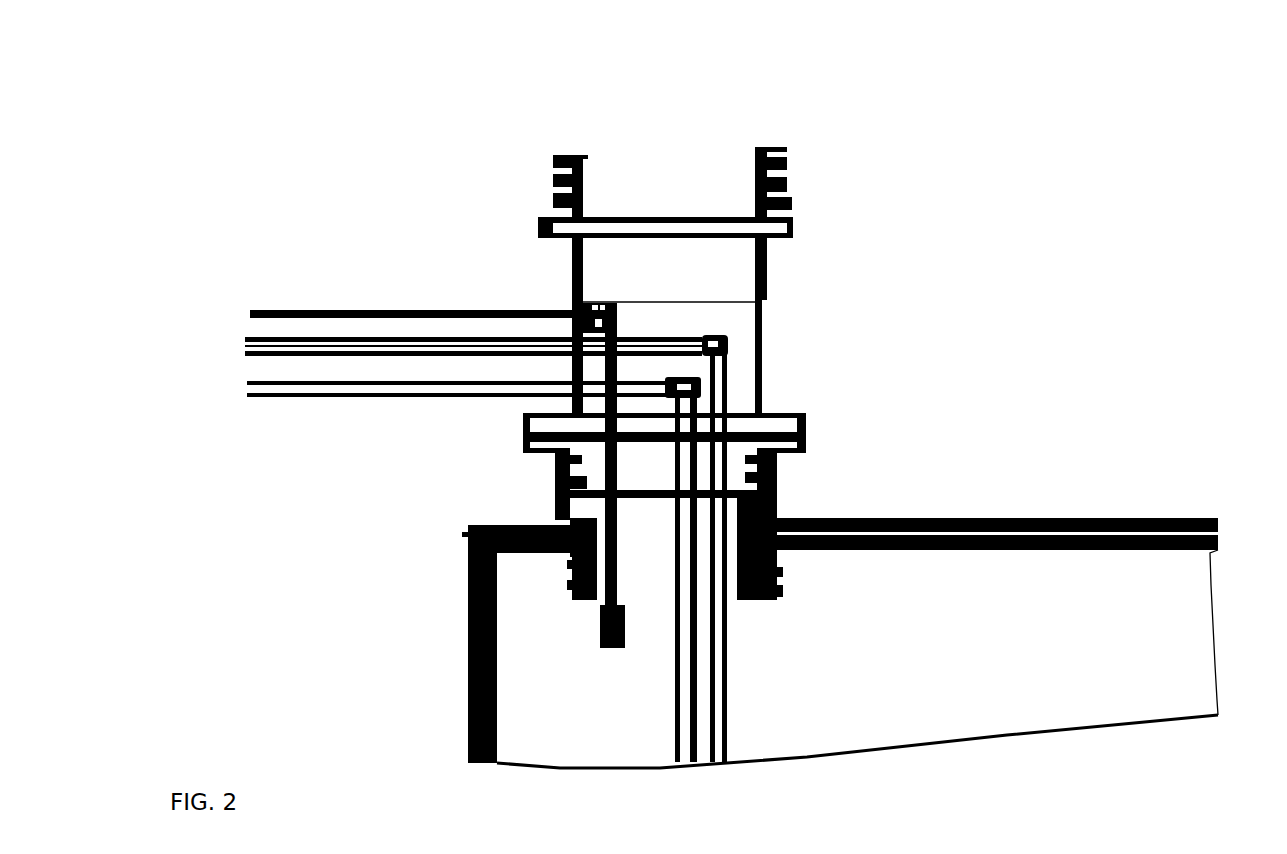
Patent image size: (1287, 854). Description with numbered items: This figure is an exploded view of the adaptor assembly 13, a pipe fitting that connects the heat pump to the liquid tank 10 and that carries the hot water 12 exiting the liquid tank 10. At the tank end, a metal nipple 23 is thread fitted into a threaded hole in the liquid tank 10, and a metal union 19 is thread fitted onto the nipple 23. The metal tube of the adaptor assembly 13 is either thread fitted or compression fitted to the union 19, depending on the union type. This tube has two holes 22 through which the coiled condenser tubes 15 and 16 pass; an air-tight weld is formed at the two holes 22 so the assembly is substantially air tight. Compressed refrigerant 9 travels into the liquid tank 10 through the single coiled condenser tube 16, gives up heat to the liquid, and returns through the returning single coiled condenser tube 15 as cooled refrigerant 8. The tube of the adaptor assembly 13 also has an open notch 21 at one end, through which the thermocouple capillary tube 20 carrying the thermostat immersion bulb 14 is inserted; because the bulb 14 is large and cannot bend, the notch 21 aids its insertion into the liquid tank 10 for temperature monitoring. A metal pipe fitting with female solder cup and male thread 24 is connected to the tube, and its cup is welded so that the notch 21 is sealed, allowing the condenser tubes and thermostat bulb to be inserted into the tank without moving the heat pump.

The cooled refrigerant 8 is at (243, 390).
The compressed refrigerant 9 is at (226, 350).
The liquid tank 10 is at (1115, 575).
The hot water 12 is at (653, 173).
The adaptor assembly 13 is at (773, 312).
The thermostat immersion bulb 14 is at (589, 631).
The returning single coiled condenser tube 15 is at (668, 722).
The single coiled condenser tube 16 is at (740, 710).
The union 19 is at (544, 481).
The thermocouple capillary tube 20 is at (329, 307).
The open notch 21 is at (577, 310).
The holes 22 is at (706, 365).
The metal nipple 23 is at (558, 576).
The pipe fitting with female solder cup and male thread 24 is at (777, 260).